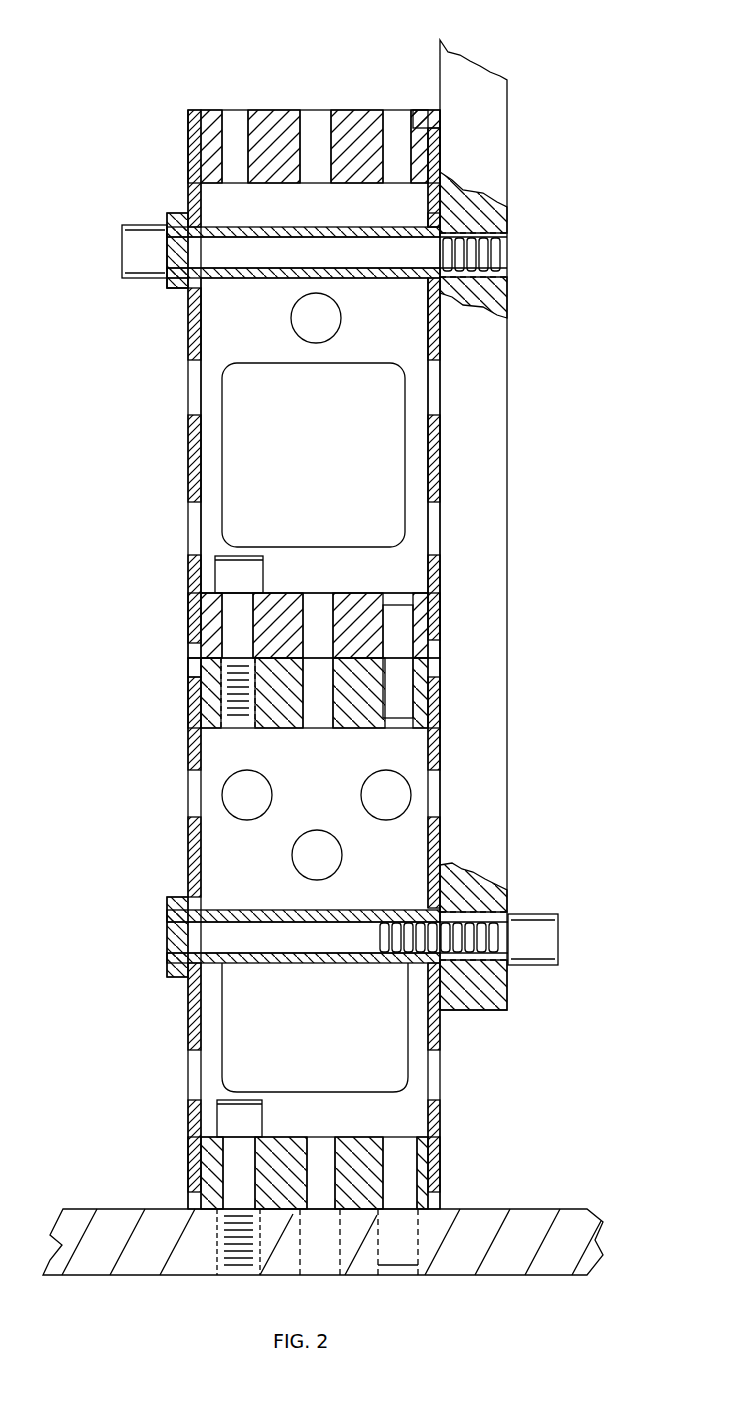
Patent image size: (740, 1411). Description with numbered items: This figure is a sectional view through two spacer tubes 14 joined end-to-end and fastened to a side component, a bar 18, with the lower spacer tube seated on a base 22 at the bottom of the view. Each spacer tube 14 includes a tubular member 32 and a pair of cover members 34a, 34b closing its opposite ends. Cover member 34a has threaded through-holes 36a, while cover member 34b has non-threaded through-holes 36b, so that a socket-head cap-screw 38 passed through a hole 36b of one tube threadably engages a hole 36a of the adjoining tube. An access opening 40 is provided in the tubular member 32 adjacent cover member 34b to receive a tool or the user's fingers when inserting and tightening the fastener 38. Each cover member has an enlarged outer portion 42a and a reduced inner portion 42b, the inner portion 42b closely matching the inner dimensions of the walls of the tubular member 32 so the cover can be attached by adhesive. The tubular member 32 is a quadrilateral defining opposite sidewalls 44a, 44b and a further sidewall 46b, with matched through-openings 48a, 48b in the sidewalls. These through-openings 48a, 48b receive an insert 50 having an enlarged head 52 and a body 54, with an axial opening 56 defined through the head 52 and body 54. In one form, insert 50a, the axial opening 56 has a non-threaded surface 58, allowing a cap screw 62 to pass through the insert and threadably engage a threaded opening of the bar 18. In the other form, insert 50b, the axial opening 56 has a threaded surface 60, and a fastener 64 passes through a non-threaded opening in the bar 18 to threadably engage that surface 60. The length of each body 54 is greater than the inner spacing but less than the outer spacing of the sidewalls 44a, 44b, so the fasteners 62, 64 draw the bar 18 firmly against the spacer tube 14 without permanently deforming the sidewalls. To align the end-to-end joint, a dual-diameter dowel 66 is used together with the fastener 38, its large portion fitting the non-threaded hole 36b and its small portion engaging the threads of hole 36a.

The spacer tube 14 is at (175, 602).
The bar 18 is at (507, 718).
The base plate 22 is at (520, 1209).
The tubular member 32 is at (441, 562).
The cover member 34a is at (372, 110).
The cover member 34b is at (368, 592).
The through-holes 36a is at (237, 110).
The through-holes 36b is at (316, 592).
The socket-head cap-screw 38 is at (213, 560).
The access opening 40 is at (330, 446).
The enlarged outer portion 42a is at (430, 110).
The reduced inner portion 42b is at (440, 170).
The sidewall 44a is at (188, 342).
The sidewall 44b is at (441, 342).
The sidewall 46b is at (402, 321).
The through-opening 48a is at (188, 385).
The through-opening 48b is at (298, 322).
The insert 50 is at (172, 204).
The insert 50a is at (167, 225).
The insert 50b is at (170, 972).
The enlarged head 52 is at (165, 283).
The body 54 is at (425, 222).
The axial opening 56 is at (400, 268).
The non-threaded surface 58 is at (282, 237).
The threaded surface 60 is at (300, 938).
The cap screw 62 is at (122, 252).
The fastener 64 is at (560, 937).
The dual-diameter dowel 66 is at (404, 630).